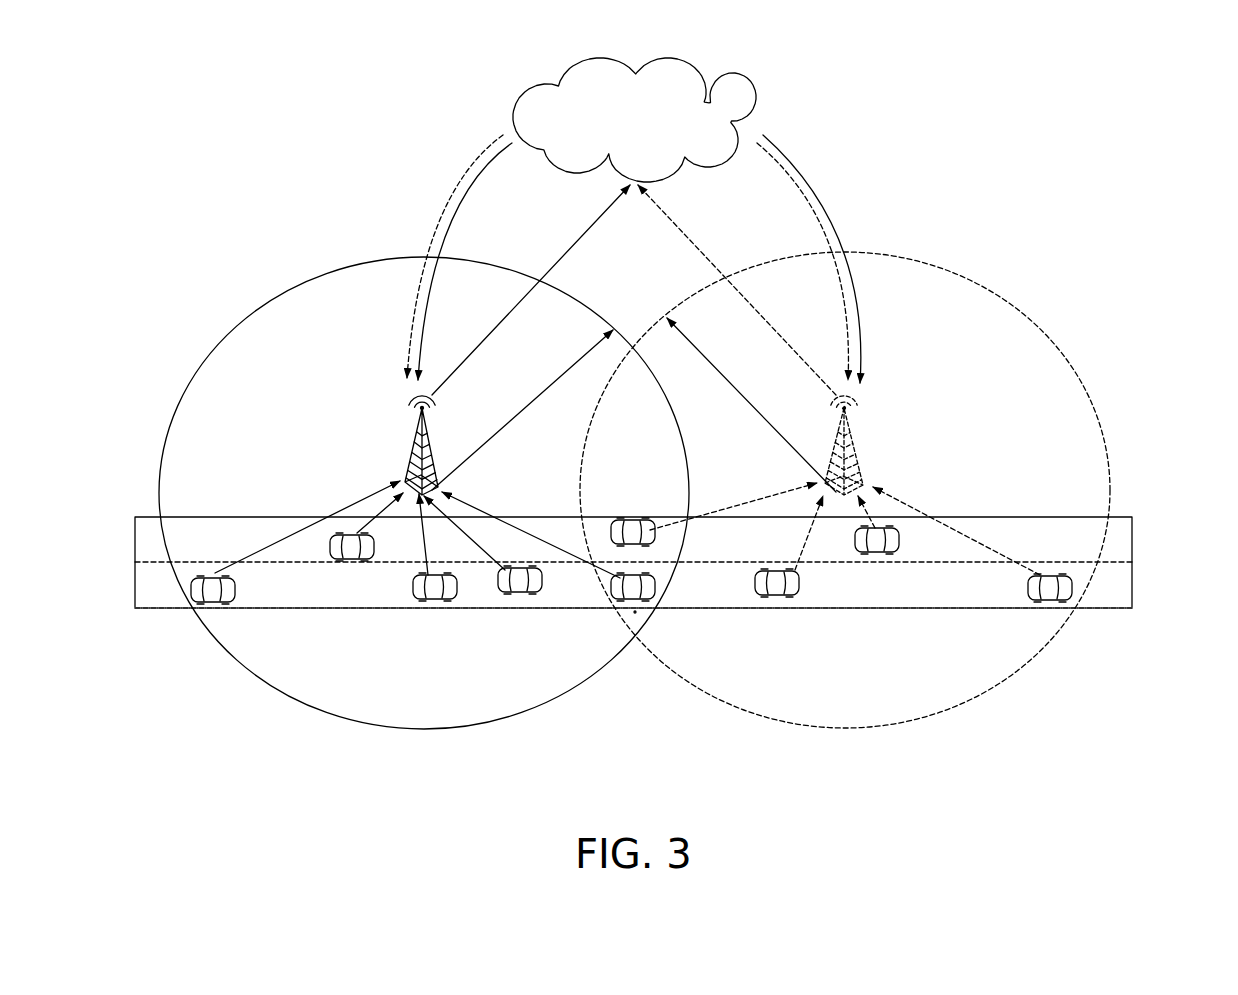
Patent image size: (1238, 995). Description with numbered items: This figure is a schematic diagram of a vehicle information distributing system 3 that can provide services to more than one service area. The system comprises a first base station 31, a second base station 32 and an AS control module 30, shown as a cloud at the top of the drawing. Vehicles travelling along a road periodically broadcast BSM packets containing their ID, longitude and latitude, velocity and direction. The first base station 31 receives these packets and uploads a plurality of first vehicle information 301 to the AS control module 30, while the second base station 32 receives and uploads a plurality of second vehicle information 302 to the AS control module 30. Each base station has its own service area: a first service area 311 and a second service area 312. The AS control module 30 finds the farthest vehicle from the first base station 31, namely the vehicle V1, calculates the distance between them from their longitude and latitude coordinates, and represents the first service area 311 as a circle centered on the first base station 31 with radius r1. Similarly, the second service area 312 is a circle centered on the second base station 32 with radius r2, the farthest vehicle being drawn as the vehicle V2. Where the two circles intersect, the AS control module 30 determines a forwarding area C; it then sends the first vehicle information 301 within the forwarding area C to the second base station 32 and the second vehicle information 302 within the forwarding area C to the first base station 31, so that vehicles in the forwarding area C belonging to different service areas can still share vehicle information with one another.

The vehicle information distributing system 3 is at (1145, 120).
The AS control module 30 is at (677, 60).
The first base station 31 is at (410, 452).
The second base station 32 is at (860, 453).
The first vehicle information 301 is at (563, 252).
The second vehicle information 302 is at (447, 190).
The first service area 311 is at (275, 693).
The second service area 312 is at (1015, 677).
The radius r1 is at (522, 410).
The radius r2 is at (751, 405).
The vehicle V1 is at (213, 605).
The second vehicle V2 is at (1050, 603).
The forwarding area C is at (635, 613).